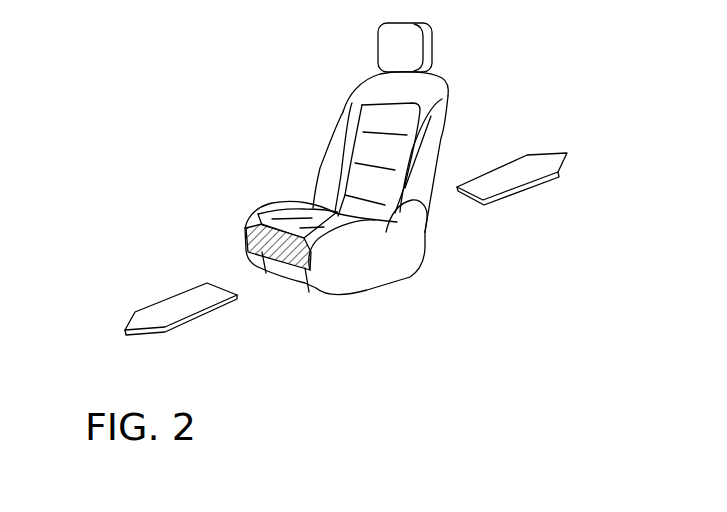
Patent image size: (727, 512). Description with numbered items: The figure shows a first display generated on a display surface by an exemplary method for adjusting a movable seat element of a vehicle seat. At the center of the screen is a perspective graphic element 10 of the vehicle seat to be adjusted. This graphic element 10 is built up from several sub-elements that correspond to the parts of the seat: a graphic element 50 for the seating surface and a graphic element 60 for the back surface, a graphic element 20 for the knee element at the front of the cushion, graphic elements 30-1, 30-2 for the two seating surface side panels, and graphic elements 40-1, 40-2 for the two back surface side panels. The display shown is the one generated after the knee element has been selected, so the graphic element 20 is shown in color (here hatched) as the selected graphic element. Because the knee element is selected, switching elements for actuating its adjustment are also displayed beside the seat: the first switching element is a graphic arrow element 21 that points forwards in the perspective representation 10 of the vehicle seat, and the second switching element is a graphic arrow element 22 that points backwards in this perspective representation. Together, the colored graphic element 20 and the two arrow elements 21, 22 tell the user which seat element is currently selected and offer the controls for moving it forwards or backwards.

The graphic element 10 is at (333, 96).
The graphic element 20 is at (268, 245).
The graphic arrow element 21 is at (186, 304).
The graphic arrow element 22 is at (522, 176).
The graphic element 30-1 is at (343, 247).
The graphic element 30-2 is at (289, 205).
The graphic element 40-1 is at (429, 137).
The graphic element 40-2 is at (337, 146).
The graphic element 50 is at (296, 226).
The graphic element 60 is at (387, 117).